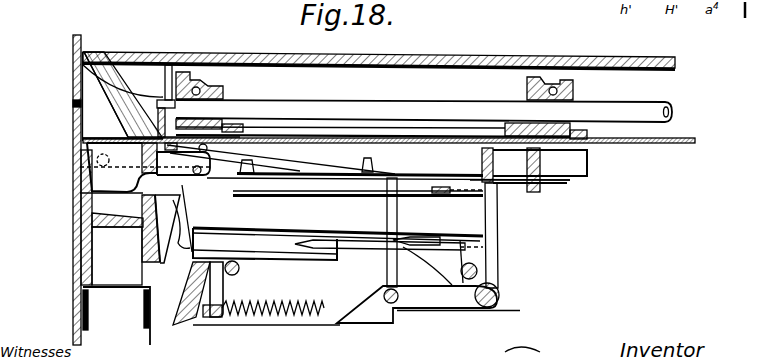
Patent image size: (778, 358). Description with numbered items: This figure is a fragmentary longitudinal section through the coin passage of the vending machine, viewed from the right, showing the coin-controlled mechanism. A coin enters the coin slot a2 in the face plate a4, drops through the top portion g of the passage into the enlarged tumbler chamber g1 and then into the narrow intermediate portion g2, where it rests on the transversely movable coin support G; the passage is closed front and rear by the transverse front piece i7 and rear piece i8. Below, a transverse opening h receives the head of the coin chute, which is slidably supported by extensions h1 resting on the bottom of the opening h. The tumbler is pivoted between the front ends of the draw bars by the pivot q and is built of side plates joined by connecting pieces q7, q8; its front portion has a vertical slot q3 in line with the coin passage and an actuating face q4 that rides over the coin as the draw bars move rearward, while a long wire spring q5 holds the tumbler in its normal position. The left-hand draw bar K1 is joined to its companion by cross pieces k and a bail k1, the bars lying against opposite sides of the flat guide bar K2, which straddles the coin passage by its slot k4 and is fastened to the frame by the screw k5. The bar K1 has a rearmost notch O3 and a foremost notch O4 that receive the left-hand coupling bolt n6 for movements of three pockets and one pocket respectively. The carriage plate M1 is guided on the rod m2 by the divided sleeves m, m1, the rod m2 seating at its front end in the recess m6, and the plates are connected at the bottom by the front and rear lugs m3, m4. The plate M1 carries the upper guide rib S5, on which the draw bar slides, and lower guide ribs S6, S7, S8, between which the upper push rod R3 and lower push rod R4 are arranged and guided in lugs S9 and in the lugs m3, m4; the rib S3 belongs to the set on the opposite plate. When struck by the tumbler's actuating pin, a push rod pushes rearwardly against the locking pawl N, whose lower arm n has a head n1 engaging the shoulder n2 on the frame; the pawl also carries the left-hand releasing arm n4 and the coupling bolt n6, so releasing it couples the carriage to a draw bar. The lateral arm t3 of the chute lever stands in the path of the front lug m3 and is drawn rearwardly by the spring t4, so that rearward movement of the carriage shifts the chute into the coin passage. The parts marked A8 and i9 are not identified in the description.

The coin slot a2 is at (75, 118).
The top beam A8 is at (379, 42).
The top portion of the coin passage g is at (161, 96).
The recess m6 is at (153, 100).
The slot k4 is at (110, 133).
The screw k5 is at (170, 113).
The front sleeve m is at (210, 87).
The guide rod m2 is at (424, 110).
The rear sleeve m1 is at (535, 93).
The bail k1 is at (582, 128).
The guide bar K2 is at (680, 141).
The foremost notch O4 is at (255, 163).
The rearmost notch O3 is at (373, 165).
The wire spring q5 is at (293, 138).
The cross pieces k is at (482, 162).
The left hand draw bar K1 is at (577, 163).
The vertical slot q3 is at (145, 167).
The connecting piece q8 is at (183, 163).
The tumbler chamber g1 is at (104, 155).
The pivot q is at (72, 152).
The face plate a4 is at (73, 172).
The connecting piece q7 is at (72, 188).
The actuating face q4 is at (78, 200).
The coin support G is at (78, 213).
The front piece i7 is at (73, 245).
The intermediate portion of the coin passage g2 is at (117, 256).
The rear piece i8 is at (157, 263).
The post part i9 is at (166, 270).
The transverse opening h is at (116, 316).
The extensions h1 is at (143, 327).
The lower guide rib S8 is at (178, 224).
The left hand plate M1 is at (338, 237).
The upper guide rib S5 is at (222, 182).
The lower guide rib S6 is at (240, 194).
The lower guide rib S7 is at (210, 228).
The lugs S9 is at (327, 248).
The upper push rod R3 is at (436, 194).
The lower guide rib S3 is at (462, 193).
The left hand coupling bolt n6 is at (392, 222).
The lower push rod R4 is at (377, 248).
The left hand releasing arm n4 is at (498, 253).
The rear lug m4 is at (478, 271).
The locking pawl N is at (432, 297).
The lower arm n is at (397, 297).
The head n1 is at (366, 318).
The shoulder n2 is at (393, 312).
The lateral arm t3 is at (223, 288).
The front lug m3 is at (240, 268).
The spring t4 is at (295, 303).